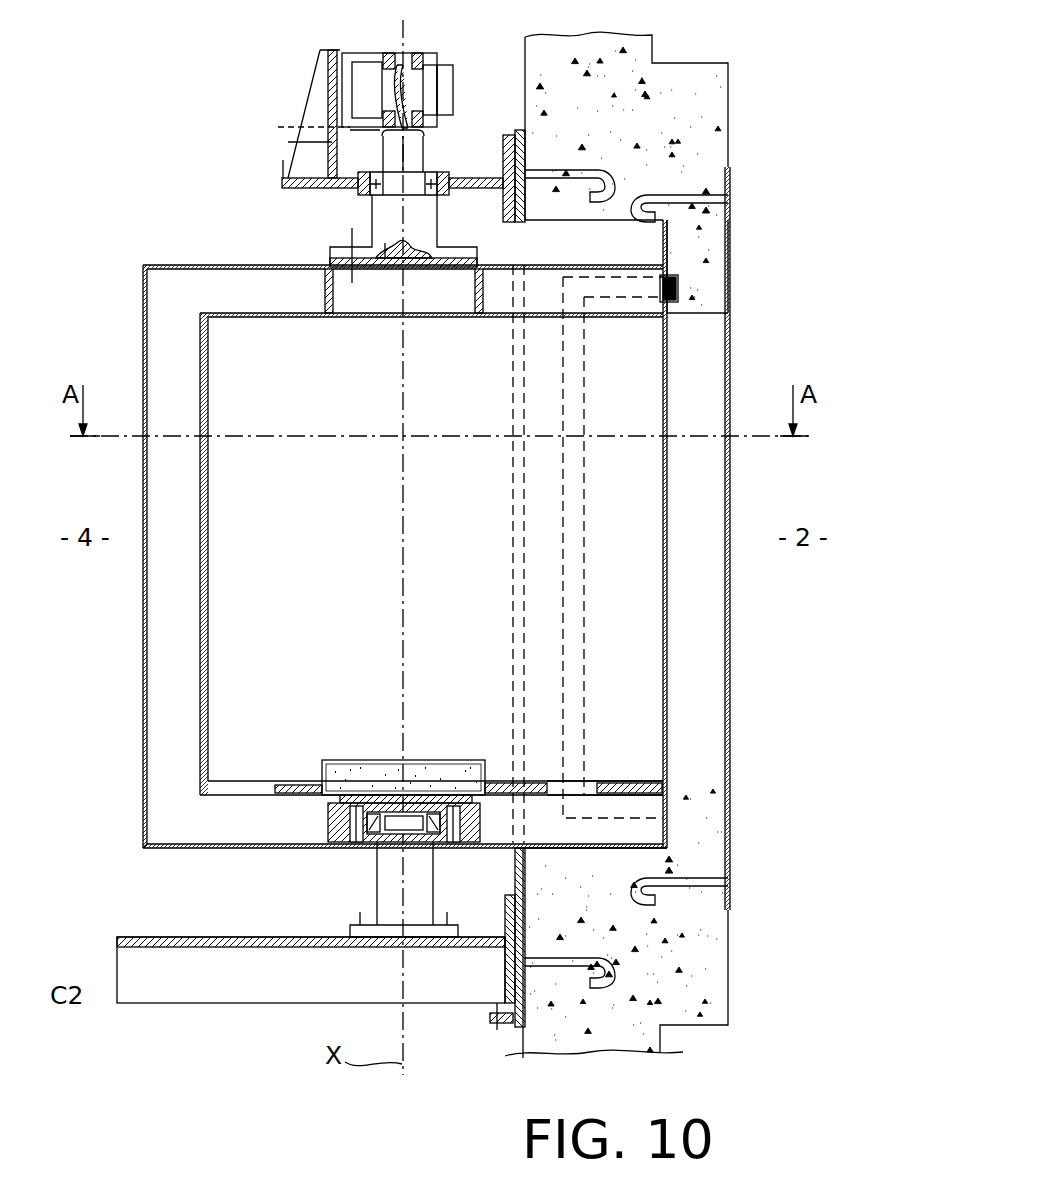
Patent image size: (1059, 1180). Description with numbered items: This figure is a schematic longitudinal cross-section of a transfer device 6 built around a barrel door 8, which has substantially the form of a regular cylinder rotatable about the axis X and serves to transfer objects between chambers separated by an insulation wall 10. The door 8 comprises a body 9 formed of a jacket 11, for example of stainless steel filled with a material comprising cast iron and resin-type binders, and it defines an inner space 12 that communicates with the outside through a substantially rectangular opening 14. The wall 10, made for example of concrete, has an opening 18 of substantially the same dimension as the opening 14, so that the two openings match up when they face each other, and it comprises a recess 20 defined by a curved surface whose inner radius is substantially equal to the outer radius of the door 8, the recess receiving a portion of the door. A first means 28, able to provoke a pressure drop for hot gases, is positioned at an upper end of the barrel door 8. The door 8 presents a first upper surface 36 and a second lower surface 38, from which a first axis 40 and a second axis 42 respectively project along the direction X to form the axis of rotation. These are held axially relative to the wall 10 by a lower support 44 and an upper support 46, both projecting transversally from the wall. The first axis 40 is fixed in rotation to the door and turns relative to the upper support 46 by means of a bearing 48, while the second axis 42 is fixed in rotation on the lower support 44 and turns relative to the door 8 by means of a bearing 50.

The transfer device 6 is at (160, 108).
The barrel door 8 is at (156, 250).
The body 9 is at (165, 740).
The insulation wall 10 is at (704, 120).
The jacket 11 is at (152, 848).
The inner space 12 is at (431, 554).
The opening 14 is at (645, 782).
The opening 18 is at (720, 316).
The recess 20 is at (650, 232).
The first means 28 is at (680, 288).
The first upper surface 36 is at (210, 263).
The second lower surface 38 is at (228, 848).
The first axis 40 is at (378, 214).
The second axis 42 is at (384, 880).
The lower support 44 is at (237, 992).
The upper support 46 is at (474, 150).
The bearing 48 is at (440, 190).
The bearing 50 is at (436, 844).